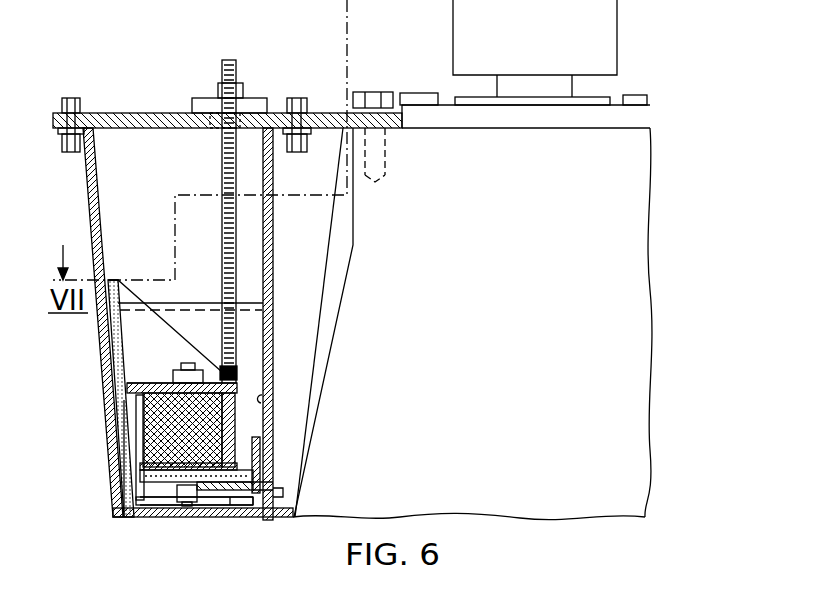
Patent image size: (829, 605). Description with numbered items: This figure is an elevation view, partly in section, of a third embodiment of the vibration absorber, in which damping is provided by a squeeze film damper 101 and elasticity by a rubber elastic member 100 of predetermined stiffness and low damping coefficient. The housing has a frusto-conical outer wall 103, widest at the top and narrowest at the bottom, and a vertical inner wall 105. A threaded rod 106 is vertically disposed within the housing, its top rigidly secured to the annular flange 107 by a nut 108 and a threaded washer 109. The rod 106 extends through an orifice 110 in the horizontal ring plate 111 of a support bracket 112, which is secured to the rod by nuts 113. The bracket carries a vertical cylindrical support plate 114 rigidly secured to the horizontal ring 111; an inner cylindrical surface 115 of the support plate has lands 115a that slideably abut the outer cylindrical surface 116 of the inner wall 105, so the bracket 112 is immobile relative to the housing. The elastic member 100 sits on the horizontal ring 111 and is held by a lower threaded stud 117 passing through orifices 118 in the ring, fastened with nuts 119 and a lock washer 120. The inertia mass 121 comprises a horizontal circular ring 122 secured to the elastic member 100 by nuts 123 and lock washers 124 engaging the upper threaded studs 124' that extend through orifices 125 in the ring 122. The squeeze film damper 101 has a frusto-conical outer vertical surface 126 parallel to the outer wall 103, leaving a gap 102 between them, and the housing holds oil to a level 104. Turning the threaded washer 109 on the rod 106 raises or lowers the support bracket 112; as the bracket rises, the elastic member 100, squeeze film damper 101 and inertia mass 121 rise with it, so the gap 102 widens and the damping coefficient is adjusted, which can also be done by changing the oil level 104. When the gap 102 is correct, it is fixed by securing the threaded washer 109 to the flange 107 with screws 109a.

The rubber elastic member 100 is at (143, 420).
The squeeze film damper 101 is at (103, 362).
The gap 102 is at (107, 282).
The outer wall 103 is at (112, 322).
The level of oil 104 is at (212, 303).
The inner wall 105 is at (269, 218).
The threaded rod 106 is at (222, 163).
The annular flange 107 is at (125, 113).
The nut 108 is at (238, 86).
The threaded washer 109 is at (262, 100).
The screws 109a is at (215, 130).
The orifice 110 is at (200, 505).
The horizontal ring plate 111 is at (140, 490).
The support bracket 112 is at (250, 506).
The nuts 113 is at (235, 506).
The vertical cylindrical support plate 114 is at (256, 440).
The inner cylindrical surface 115 is at (283, 489).
The lands 115a is at (265, 490).
The outer cylindrical surface 116 is at (262, 398).
The lower threaded stud 117 is at (187, 506).
The orifices 118 is at (182, 430).
The nuts 119 is at (165, 500).
The lock washer 120 is at (142, 512).
The inertia mass 121 is at (240, 384).
The horizontal circular ring 122 is at (150, 383).
The nuts 123 is at (228, 372).
The lock washers 124 is at (181, 362).
The upper threaded studs 124' is at (207, 344).
The orifices 125 is at (221, 429).
The frusto-conical outer vertical surface 126 is at (125, 452).